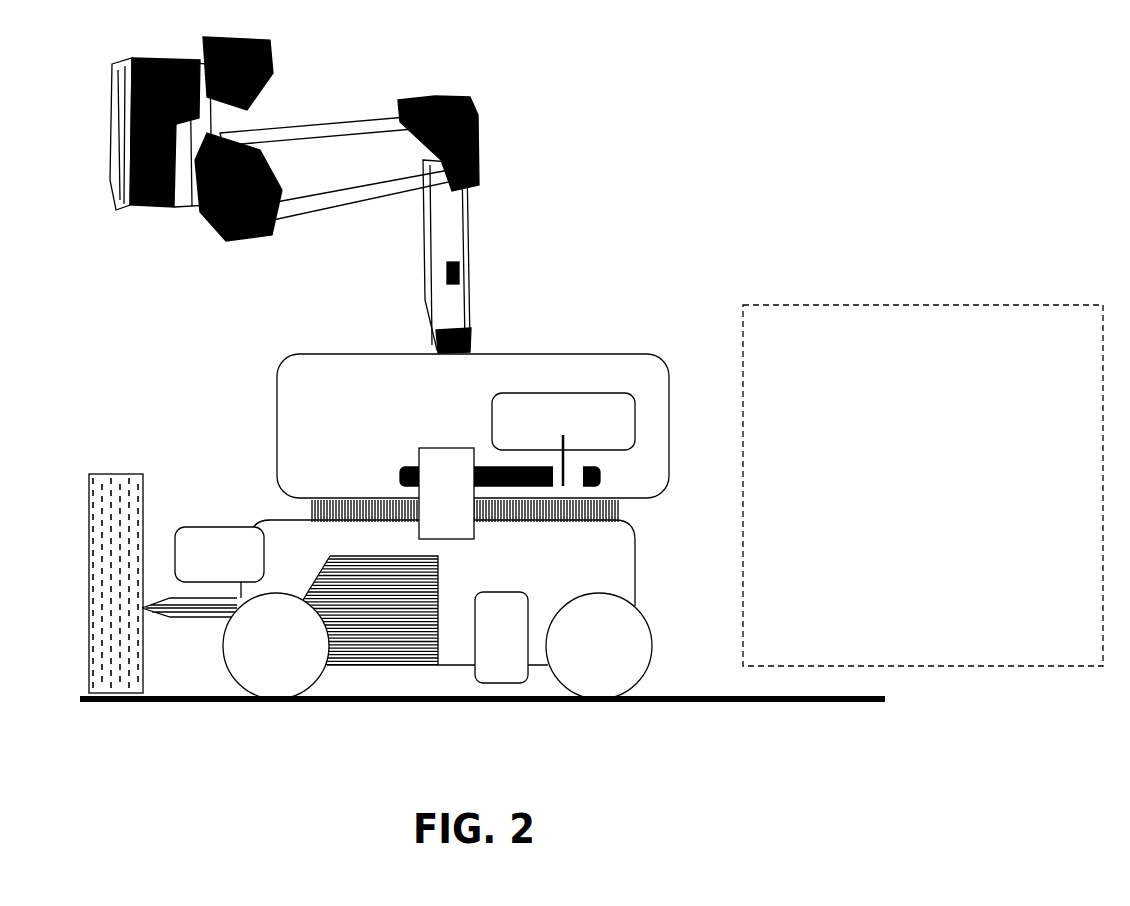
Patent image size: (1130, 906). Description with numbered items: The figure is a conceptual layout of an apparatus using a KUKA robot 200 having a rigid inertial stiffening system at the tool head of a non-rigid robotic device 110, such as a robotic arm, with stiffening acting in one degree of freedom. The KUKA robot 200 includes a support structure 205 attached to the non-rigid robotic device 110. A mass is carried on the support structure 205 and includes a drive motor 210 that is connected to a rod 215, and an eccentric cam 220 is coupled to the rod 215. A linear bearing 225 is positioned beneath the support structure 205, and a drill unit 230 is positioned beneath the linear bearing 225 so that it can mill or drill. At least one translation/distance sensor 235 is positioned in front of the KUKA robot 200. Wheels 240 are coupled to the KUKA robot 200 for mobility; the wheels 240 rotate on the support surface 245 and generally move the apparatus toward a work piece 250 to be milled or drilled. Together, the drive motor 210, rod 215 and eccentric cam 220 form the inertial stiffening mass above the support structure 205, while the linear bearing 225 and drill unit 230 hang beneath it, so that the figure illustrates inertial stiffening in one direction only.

The non-rigid robotic device 110 is at (501, 222).
The KUKA robot 200 is at (638, 233).
The support structure 205 is at (674, 365).
The drive motor 210 is at (639, 413).
The rod 215 is at (524, 467).
The eccentric cam 220 is at (584, 474).
The linear bearing 225 is at (622, 509).
The drill unit 230 is at (444, 565).
The translation/distance sensor 235 is at (243, 548).
The wheels 240 is at (652, 608).
The support surface 245 is at (673, 693).
The work piece 250 is at (115, 665).